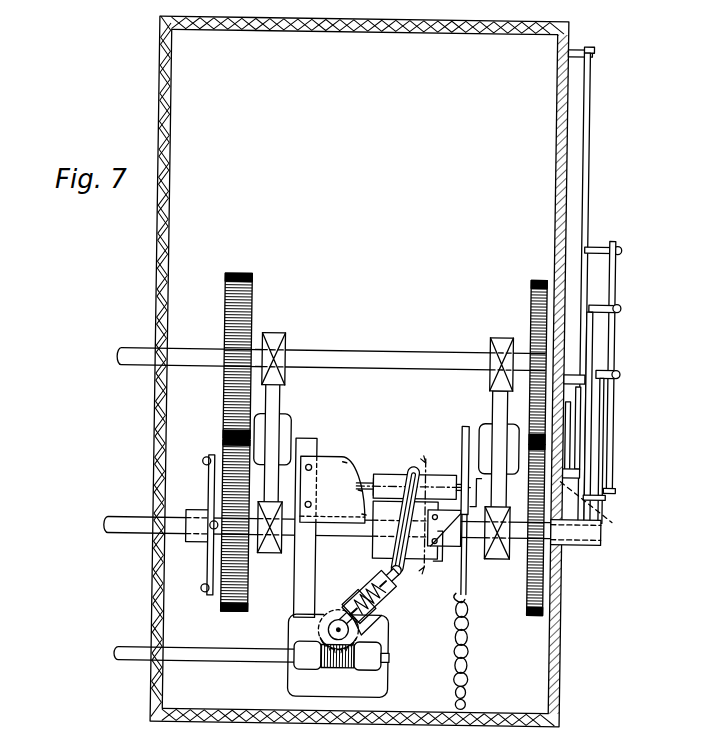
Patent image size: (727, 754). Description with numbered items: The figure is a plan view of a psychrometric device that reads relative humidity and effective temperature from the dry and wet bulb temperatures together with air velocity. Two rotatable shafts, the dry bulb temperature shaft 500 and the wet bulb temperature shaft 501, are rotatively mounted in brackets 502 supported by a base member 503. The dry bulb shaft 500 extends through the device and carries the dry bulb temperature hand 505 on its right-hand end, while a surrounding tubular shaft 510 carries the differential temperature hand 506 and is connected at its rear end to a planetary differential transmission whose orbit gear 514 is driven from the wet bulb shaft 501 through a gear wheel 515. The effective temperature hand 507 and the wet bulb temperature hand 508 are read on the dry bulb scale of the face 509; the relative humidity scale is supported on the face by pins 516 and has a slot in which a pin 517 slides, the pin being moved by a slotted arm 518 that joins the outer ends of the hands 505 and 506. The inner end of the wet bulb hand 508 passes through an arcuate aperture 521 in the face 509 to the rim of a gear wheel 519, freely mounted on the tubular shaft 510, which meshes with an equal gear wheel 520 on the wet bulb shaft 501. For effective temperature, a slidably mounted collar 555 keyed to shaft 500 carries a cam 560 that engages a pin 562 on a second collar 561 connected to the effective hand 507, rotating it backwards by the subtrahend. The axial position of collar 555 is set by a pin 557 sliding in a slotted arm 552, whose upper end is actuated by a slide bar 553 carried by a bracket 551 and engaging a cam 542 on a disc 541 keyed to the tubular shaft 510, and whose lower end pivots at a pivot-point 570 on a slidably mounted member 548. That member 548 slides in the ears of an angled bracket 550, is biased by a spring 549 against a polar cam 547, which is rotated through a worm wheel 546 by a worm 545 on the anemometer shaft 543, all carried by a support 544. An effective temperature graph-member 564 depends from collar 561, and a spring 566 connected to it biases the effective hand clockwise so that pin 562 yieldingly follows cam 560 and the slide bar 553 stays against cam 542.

The dry bulb temperature shaft 500 is at (137, 537).
The wet bulb temperature shaft 501 is at (133, 369).
The brackets 502 is at (280, 428).
The base member 503 is at (268, 726).
The dry bulb temperature hand 505 is at (607, 495).
The differential temperature hand 506 is at (593, 343).
The effective temperature hand 507 is at (570, 438).
The wet bulb temperature hand 508 is at (577, 412).
The face 509 is at (556, 224).
The tubular shaft 510 is at (579, 544).
The orbit gear 514 is at (224, 446).
The gear wheel 515 is at (252, 300).
The pins 516 is at (577, 48).
The pin 517 is at (597, 247).
The slotted arm 518 is at (615, 302).
The gear wheel 519 is at (537, 616).
The gear wheel 520 is at (530, 291).
The arcuate aperture 521 is at (605, 511).
The disc 541 is at (313, 440).
The cam 542 is at (336, 457).
The anemometer shaft 543 is at (132, 665).
The support 544 is at (392, 677).
The worm 545 is at (341, 669).
The worm wheel 546 is at (341, 633).
The polar cam 547 is at (331, 630).
The slidably mounted member 548 is at (407, 587).
The spring 549 is at (393, 604).
The bracket 550 is at (392, 575).
The bracket 551 is at (442, 472).
The slotted arm 552 is at (413, 468).
The slide bar 553 is at (368, 482).
The slidably mounted collar 555 is at (437, 562).
The pin 557 is at (405, 517).
The cam 560 is at (444, 528).
The collar 561 is at (470, 585).
The pin 562 is at (463, 430).
The effective temperature graph-member 564 is at (472, 601).
The spring 566 is at (472, 666).
The pivot-point 570 is at (394, 564).